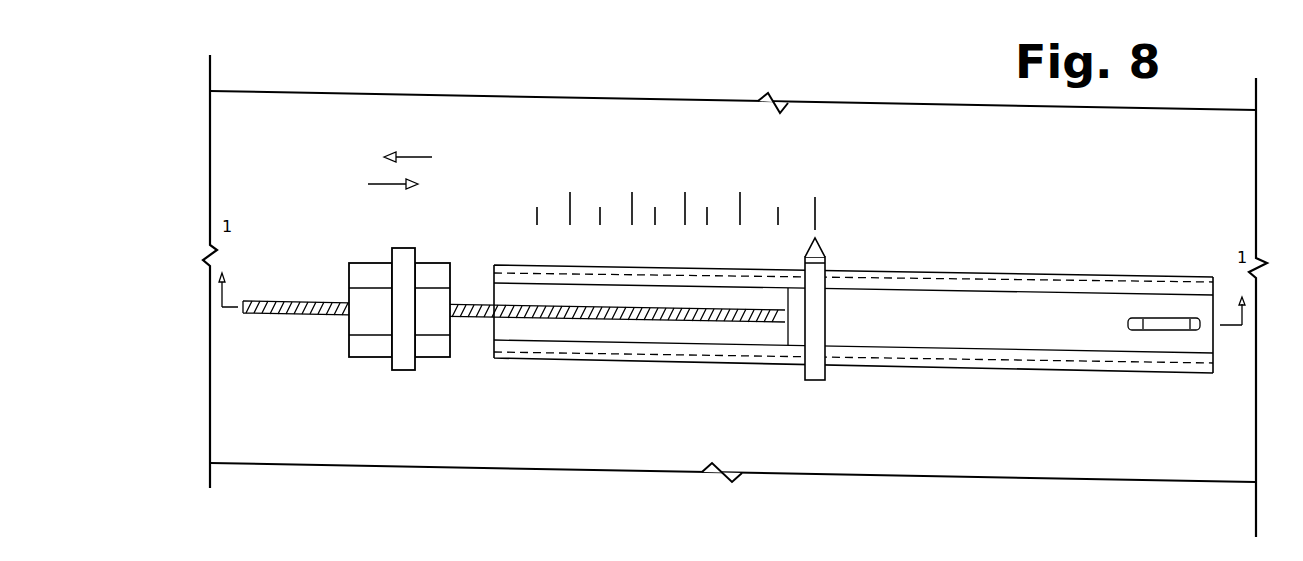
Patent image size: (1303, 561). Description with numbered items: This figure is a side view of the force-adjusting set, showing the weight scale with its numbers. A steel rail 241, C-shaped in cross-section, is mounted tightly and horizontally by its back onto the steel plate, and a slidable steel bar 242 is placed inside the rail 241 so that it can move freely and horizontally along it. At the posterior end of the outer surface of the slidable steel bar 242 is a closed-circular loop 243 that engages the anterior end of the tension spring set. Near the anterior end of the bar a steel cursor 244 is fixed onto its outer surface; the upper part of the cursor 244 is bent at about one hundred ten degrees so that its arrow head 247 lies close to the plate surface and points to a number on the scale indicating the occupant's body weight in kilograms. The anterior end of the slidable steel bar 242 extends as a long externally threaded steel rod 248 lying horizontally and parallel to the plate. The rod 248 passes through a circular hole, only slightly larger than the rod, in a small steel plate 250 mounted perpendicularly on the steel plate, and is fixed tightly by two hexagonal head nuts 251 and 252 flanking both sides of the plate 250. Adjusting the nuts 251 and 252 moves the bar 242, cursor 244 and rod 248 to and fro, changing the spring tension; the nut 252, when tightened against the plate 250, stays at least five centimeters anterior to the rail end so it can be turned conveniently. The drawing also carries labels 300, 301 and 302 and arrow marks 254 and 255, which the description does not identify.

The base board 300 is at (270, 87).
The top surface of base board 301 is at (348, 112).
The scale 302 is at (828, 202).
The steel rail 241 is at (888, 268).
The slidable steel bar 242 is at (950, 313).
The closed-circular loop 243 is at (1133, 318).
The cursor 244 is at (815, 322).
The arrow head 247 is at (822, 232).
The long steel rod 248 is at (298, 314).
The small steel plate 250 is at (405, 370).
The hexagonal head nut 251 is at (358, 352).
The hexagonal head nut 252 is at (435, 357).
The direction arrow left 254 is at (386, 160).
The direction arrow right 255 is at (418, 186).